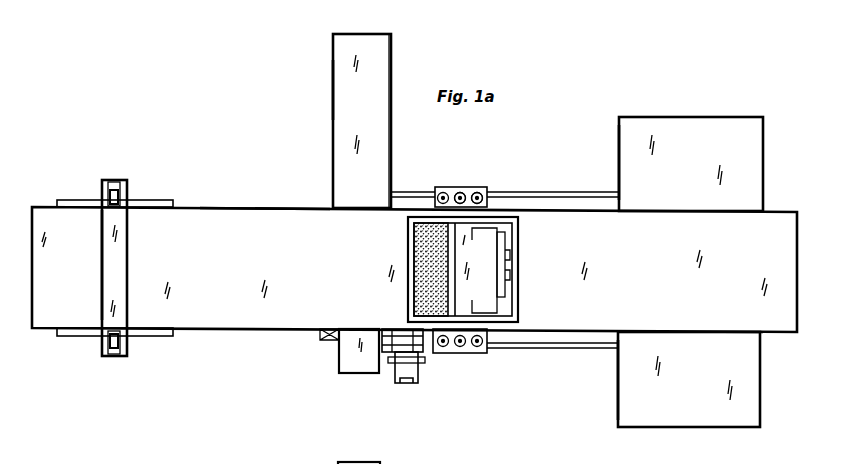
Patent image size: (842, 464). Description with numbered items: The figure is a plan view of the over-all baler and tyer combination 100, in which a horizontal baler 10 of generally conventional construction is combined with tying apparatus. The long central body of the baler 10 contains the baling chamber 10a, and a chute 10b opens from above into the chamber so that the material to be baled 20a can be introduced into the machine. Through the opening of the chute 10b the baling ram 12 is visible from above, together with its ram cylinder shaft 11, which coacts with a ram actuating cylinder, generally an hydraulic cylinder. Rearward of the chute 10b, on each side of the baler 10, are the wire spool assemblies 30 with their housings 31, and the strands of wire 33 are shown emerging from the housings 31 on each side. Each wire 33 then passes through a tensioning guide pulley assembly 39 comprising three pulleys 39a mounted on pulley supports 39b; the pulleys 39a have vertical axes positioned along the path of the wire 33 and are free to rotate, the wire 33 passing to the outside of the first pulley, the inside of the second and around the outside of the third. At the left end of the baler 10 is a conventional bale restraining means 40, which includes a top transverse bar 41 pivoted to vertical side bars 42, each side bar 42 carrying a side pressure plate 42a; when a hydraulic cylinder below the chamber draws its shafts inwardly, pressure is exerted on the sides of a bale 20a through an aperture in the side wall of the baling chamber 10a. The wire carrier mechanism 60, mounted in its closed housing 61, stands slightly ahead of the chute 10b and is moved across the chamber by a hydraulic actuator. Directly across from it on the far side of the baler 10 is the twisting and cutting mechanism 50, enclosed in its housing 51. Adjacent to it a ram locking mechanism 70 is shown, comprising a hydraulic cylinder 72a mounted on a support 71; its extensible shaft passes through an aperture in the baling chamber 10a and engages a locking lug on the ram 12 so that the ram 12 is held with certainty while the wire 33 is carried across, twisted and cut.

The baler and tyer combination 100 is at (789, 113).
The horizontal baler 10 is at (785, 209).
The baling chamber 10a is at (293, 207).
The chute 10b is at (410, 240).
The ram cylinder shaft 11 is at (509, 251).
The baling ram 12 is at (482, 266).
The material to be baled 20a is at (432, 272).
The wire spool assembly 30 is at (675, 115).
The housing 31 is at (622, 132).
The wire 33 is at (423, 192).
The tensioning guide pulley assembly 39 is at (486, 185).
The pulley 39a is at (459, 191).
The pulley support 39b is at (480, 191).
The bale restraining means 40 is at (101, 258).
The top transverse bar 41 is at (115, 275).
The vertical side bar 42 is at (113, 180).
The side pressure plate 42a is at (73, 200).
The twisting and cutting mechanism 50 is at (339, 362).
The housing 51 is at (352, 365).
The wire carrier mechanism 60 is at (331, 61).
The closed housing 61 is at (337, 85).
The ram locking mechanism 70 is at (400, 385).
The support 71 is at (423, 361).
The hydraulic cylinder 72a is at (412, 386).